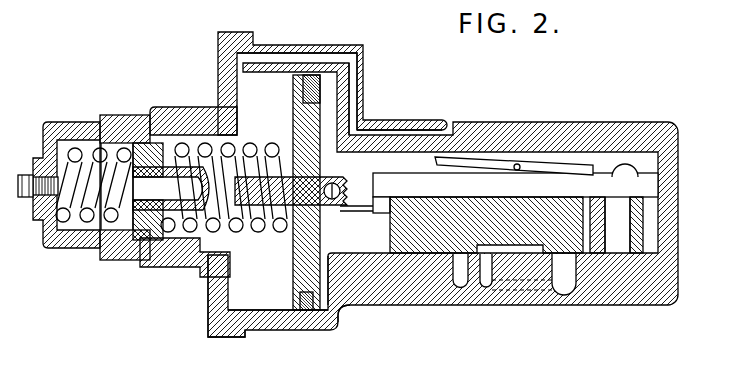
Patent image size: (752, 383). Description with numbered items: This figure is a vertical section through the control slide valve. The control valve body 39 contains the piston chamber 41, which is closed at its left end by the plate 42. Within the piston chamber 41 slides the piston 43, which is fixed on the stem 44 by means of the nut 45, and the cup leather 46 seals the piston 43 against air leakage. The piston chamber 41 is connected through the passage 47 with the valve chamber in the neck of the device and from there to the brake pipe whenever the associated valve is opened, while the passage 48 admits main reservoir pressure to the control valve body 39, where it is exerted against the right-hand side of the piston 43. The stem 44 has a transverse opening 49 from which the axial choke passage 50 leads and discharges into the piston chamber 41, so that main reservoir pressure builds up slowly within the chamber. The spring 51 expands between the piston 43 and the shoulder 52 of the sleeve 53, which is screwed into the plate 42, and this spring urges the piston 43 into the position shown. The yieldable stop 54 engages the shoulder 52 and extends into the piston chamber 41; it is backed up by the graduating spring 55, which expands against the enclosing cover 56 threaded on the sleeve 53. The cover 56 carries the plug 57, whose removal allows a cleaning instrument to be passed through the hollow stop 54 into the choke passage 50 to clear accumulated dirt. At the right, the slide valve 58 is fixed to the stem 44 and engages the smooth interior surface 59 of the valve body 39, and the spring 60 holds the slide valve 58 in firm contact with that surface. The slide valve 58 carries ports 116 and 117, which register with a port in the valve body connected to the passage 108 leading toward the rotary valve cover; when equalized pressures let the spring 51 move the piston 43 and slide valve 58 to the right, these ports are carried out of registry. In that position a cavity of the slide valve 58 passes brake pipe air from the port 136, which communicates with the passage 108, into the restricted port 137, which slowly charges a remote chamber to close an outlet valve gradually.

The control valve body 39 is at (606, 123).
The piston chamber 41 is at (262, 306).
The plate 42 is at (208, 313).
The piston 43 is at (295, 113).
The stem 44 is at (358, 177).
The nut 45 is at (278, 225).
The cup leather 46 is at (309, 312).
The passage 47 is at (398, 132).
The passage 48 is at (638, 171).
The transverse opening 49 is at (336, 211).
The choke passage 50 is at (257, 223).
The spring 51 is at (252, 147).
The shoulder 52 is at (147, 232).
The sleeve 53 is at (183, 260).
The yieldable stop 54 is at (172, 198).
The graduating spring 55 is at (64, 168).
The cover 56 is at (76, 249).
The plug 57 is at (27, 198).
The slide valve 58 is at (403, 227).
The interior surface 59 is at (371, 257).
The spring 60 is at (493, 162).
The passage 108 is at (567, 293).
The port 116 is at (587, 254).
The port 117 is at (618, 252).
The port 136 is at (485, 286).
The restricted port 137 is at (460, 285).